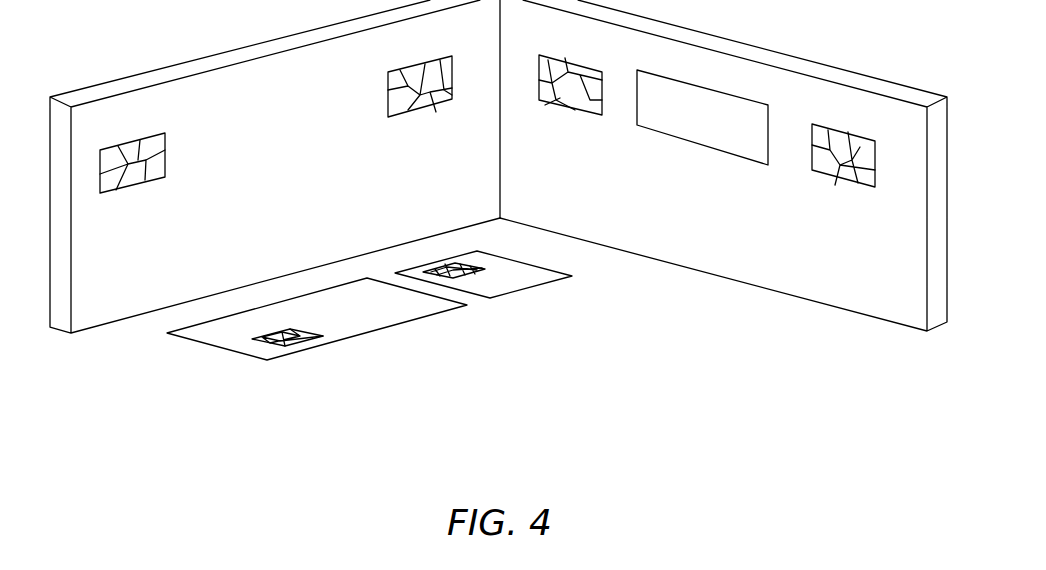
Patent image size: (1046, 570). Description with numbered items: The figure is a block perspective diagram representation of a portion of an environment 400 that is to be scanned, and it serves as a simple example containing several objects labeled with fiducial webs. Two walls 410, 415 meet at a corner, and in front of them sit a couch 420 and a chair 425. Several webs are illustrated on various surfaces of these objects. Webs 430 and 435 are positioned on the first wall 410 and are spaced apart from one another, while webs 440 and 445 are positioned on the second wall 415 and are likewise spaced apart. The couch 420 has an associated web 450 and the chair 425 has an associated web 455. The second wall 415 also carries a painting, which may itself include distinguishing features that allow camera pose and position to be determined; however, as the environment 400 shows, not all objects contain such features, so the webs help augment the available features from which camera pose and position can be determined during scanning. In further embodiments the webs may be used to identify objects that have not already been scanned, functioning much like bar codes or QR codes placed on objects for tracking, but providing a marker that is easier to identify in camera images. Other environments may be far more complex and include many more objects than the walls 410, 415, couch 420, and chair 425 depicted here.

The environment 400 is at (495, 398).
The wall 410 is at (265, 41).
The wall 415 is at (712, 35).
The couch 420 is at (187, 340).
The chair 425 is at (540, 285).
The web 430 is at (138, 184).
The web 435 is at (420, 117).
The web 440 is at (555, 95).
The web 445 is at (838, 176).
The web 450 is at (720, 148).
The web 455 is at (445, 268).